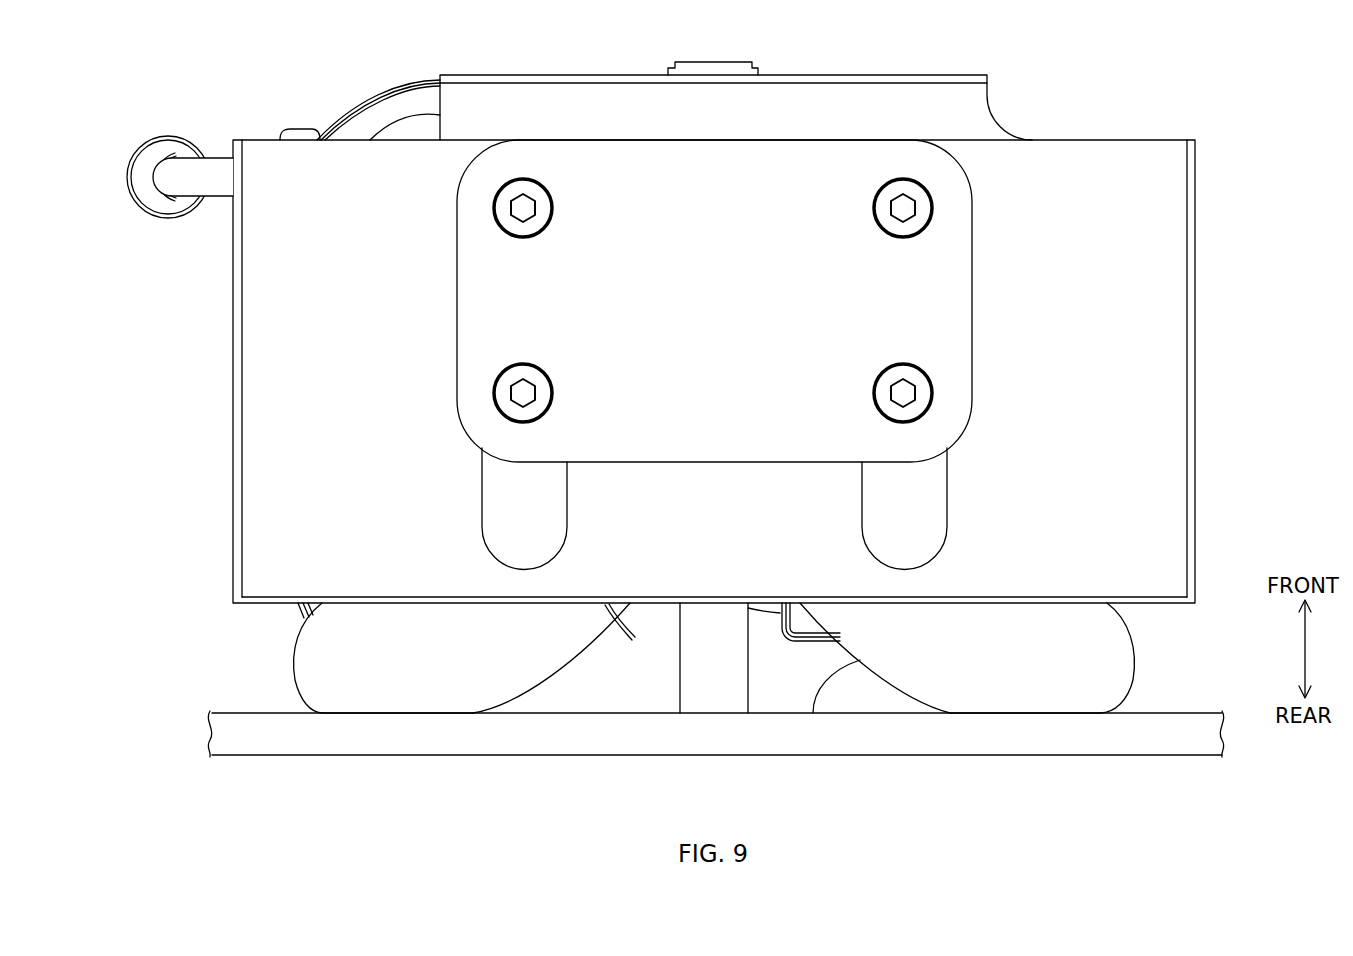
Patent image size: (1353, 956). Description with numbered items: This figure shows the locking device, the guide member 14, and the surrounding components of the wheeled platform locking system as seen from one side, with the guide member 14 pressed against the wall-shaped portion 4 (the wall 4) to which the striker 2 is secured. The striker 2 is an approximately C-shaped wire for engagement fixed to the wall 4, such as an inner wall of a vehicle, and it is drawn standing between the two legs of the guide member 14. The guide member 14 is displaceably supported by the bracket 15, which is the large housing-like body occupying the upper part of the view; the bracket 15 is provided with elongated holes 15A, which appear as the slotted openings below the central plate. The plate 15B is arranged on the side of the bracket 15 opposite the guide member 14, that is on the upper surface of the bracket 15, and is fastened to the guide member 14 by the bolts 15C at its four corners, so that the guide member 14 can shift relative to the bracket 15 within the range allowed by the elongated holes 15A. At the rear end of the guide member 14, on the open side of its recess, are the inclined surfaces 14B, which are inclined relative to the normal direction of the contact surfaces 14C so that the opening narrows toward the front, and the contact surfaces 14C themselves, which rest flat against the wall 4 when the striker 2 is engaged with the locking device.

The striker 2 is at (692, 677).
The wall-shaped portion 4 is at (853, 742).
The guide member 14 is at (1110, 645).
The inclined surfaces 14B is at (567, 662).
The contact surfaces 14C is at (390, 713).
The bracket 15 is at (1165, 290).
The elongated holes 15A is at (483, 507).
The plate 15B is at (808, 155).
The bolts 15C is at (523, 178).